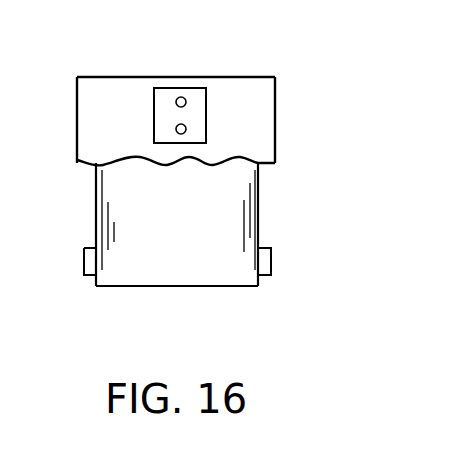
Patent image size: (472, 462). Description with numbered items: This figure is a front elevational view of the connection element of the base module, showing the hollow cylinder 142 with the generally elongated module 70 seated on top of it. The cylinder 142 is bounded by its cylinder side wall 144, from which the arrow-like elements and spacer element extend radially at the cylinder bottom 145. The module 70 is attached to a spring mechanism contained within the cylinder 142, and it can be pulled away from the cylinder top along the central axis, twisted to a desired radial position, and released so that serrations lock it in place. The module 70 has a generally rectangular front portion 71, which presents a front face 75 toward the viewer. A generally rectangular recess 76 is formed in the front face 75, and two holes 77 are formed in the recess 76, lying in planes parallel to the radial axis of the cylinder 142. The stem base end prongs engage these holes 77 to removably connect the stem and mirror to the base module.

The elongated module 70 is at (243, 76).
The front face 75 is at (85, 115).
The front portion 71 is at (265, 117).
The rectangular recess 76 is at (193, 95).
The holes 77 is at (175, 128).
The cylinder side wall 144 is at (202, 226).
The hollow cylinder 142 is at (243, 208).
The cylinder bottom 145 is at (185, 286).